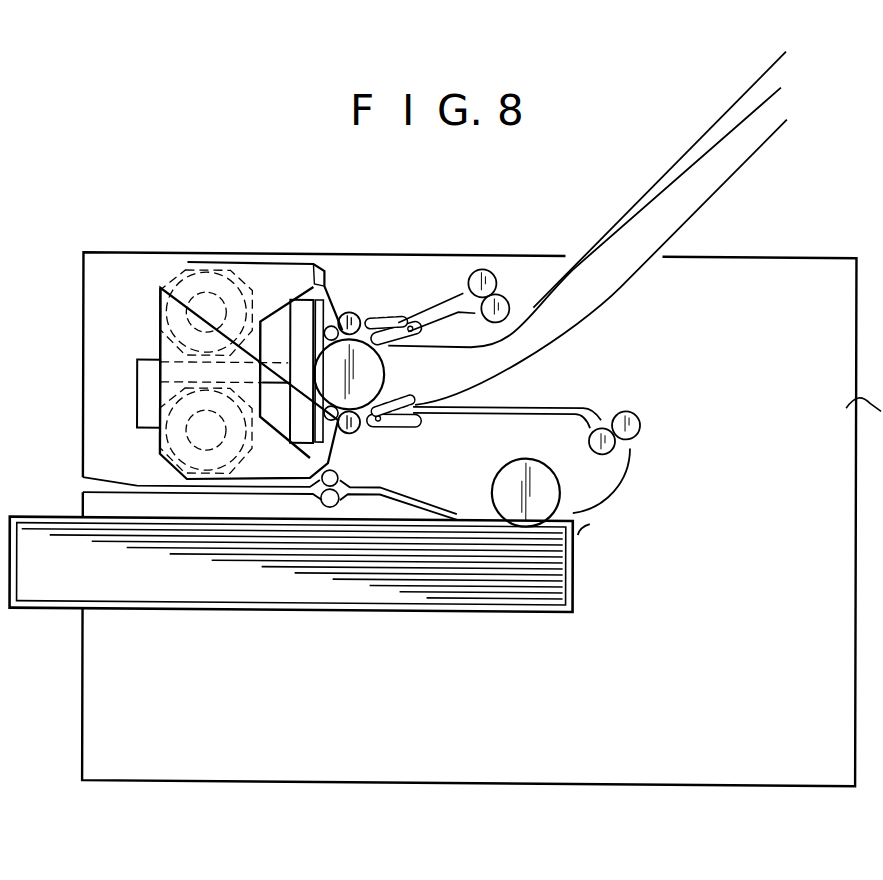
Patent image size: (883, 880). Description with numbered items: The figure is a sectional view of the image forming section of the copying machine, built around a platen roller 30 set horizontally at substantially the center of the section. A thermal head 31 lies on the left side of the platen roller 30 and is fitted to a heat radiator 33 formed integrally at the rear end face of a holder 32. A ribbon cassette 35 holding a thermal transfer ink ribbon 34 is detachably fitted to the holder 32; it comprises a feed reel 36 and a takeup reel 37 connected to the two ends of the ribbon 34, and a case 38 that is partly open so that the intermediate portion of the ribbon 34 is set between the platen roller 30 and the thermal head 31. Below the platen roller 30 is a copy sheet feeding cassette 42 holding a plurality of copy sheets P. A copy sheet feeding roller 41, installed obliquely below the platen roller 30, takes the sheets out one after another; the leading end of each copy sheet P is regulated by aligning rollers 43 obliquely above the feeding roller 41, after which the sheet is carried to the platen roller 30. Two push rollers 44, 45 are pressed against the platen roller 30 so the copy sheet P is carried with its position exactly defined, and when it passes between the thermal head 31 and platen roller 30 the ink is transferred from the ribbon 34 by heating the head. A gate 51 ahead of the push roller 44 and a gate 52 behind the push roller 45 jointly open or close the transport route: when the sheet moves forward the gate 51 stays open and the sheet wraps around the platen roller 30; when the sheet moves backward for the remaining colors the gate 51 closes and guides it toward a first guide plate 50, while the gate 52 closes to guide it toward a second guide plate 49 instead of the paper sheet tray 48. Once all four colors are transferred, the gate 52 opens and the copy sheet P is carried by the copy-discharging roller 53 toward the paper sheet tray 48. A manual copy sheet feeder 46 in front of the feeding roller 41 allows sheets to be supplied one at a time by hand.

The platen roller 30 is at (383, 369).
The thermal head 31 is at (327, 293).
The holder 32 is at (138, 375).
The heat radiator 33 is at (300, 302).
The thermal transfer ink ribbon 34 is at (333, 312).
The ribbon cassette 35 is at (196, 262).
The feed reel 36 is at (187, 306).
The takeup reel 37 is at (175, 466).
The case 38 is at (162, 310).
The copy sheet feeding roller 41 is at (505, 467).
The copy sheet feeding cassette 42 is at (568, 574).
The aligning rollers 43 is at (640, 424).
The push roller 44 is at (351, 434).
The push roller 45 is at (360, 329).
The manual copy sheet feeder 46 is at (233, 489).
The paper sheet tray 48 is at (733, 100).
The second guide plate 49 is at (690, 173).
The first guide plate 50 is at (712, 193).
The gate 51 is at (415, 429).
The gate 52 is at (405, 322).
The copy-discharging roller 53 is at (483, 268).
The copy sheet P is at (488, 588).